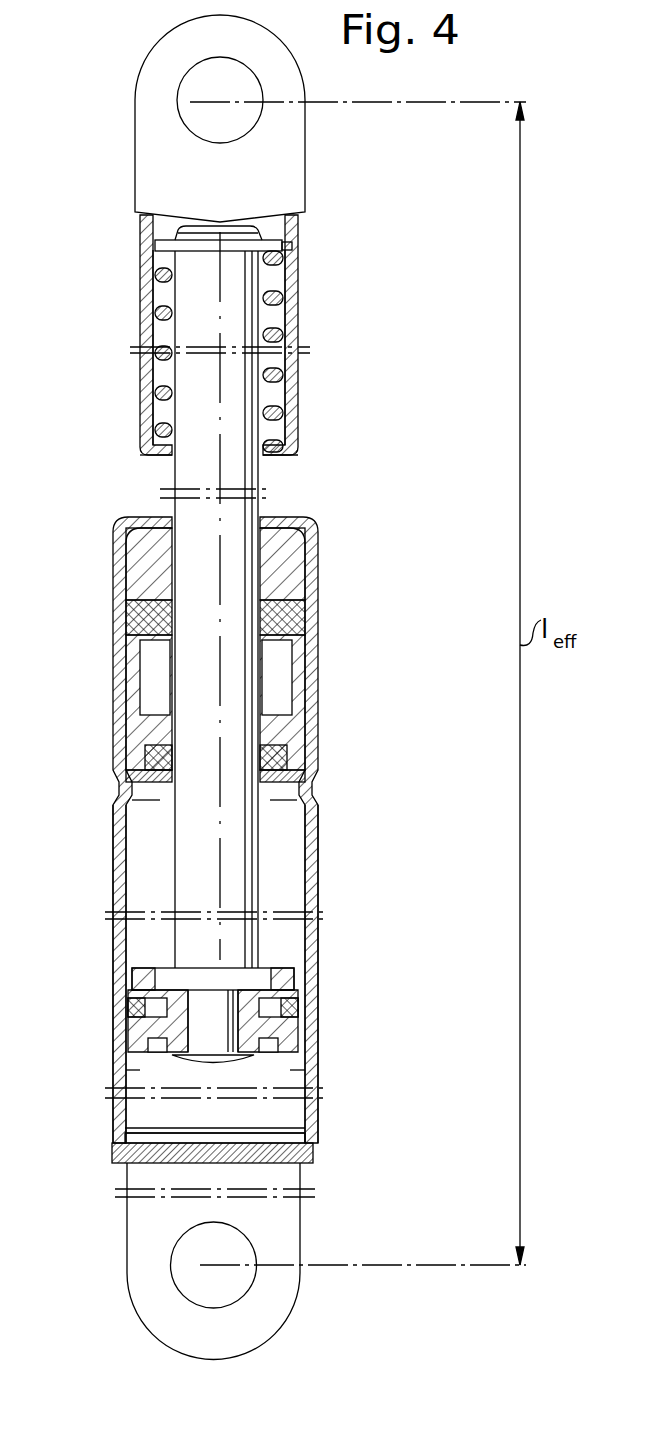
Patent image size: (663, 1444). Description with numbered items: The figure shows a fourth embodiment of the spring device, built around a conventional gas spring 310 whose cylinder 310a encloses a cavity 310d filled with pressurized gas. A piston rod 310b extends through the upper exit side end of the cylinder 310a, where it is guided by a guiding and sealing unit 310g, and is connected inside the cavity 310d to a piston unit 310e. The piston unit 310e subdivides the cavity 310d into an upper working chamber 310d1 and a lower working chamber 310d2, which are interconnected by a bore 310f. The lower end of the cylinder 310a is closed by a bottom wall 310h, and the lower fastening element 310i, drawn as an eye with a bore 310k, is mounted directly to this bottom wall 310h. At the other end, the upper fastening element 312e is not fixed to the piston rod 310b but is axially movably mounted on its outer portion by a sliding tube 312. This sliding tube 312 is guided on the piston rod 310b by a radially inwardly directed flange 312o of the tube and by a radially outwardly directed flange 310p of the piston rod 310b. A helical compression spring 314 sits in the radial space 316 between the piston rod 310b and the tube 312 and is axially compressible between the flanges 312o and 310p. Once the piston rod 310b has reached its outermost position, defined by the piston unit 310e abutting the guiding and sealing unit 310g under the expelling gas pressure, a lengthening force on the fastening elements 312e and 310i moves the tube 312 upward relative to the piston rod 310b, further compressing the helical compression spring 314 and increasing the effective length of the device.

The fastening element 312e is at (146, 133).
The radially outwardly directed flange 310p is at (160, 233).
The sliding tube 312 is at (146, 280).
The helical compression spring 314 is at (146, 367).
The radial space 316 is at (152, 412).
The radially inwardly directed flange 312o is at (163, 455).
The piston rod 310b is at (248, 580).
The gas spring 310 is at (319, 754).
The guiding and sealing unit 310g is at (148, 757).
The working chamber 310d1 is at (290, 833).
The cavity 310d is at (136, 866).
The cylinder 310a is at (385, 911).
The bore 310f is at (290, 996).
The piston unit 310e is at (295, 1042).
The working chamber 310d2 is at (290, 1077).
The bottom wall 310h is at (290, 1130).
The fastening element 310i is at (131, 1230).
The bore of lower fastening eye 310k is at (172, 1286).